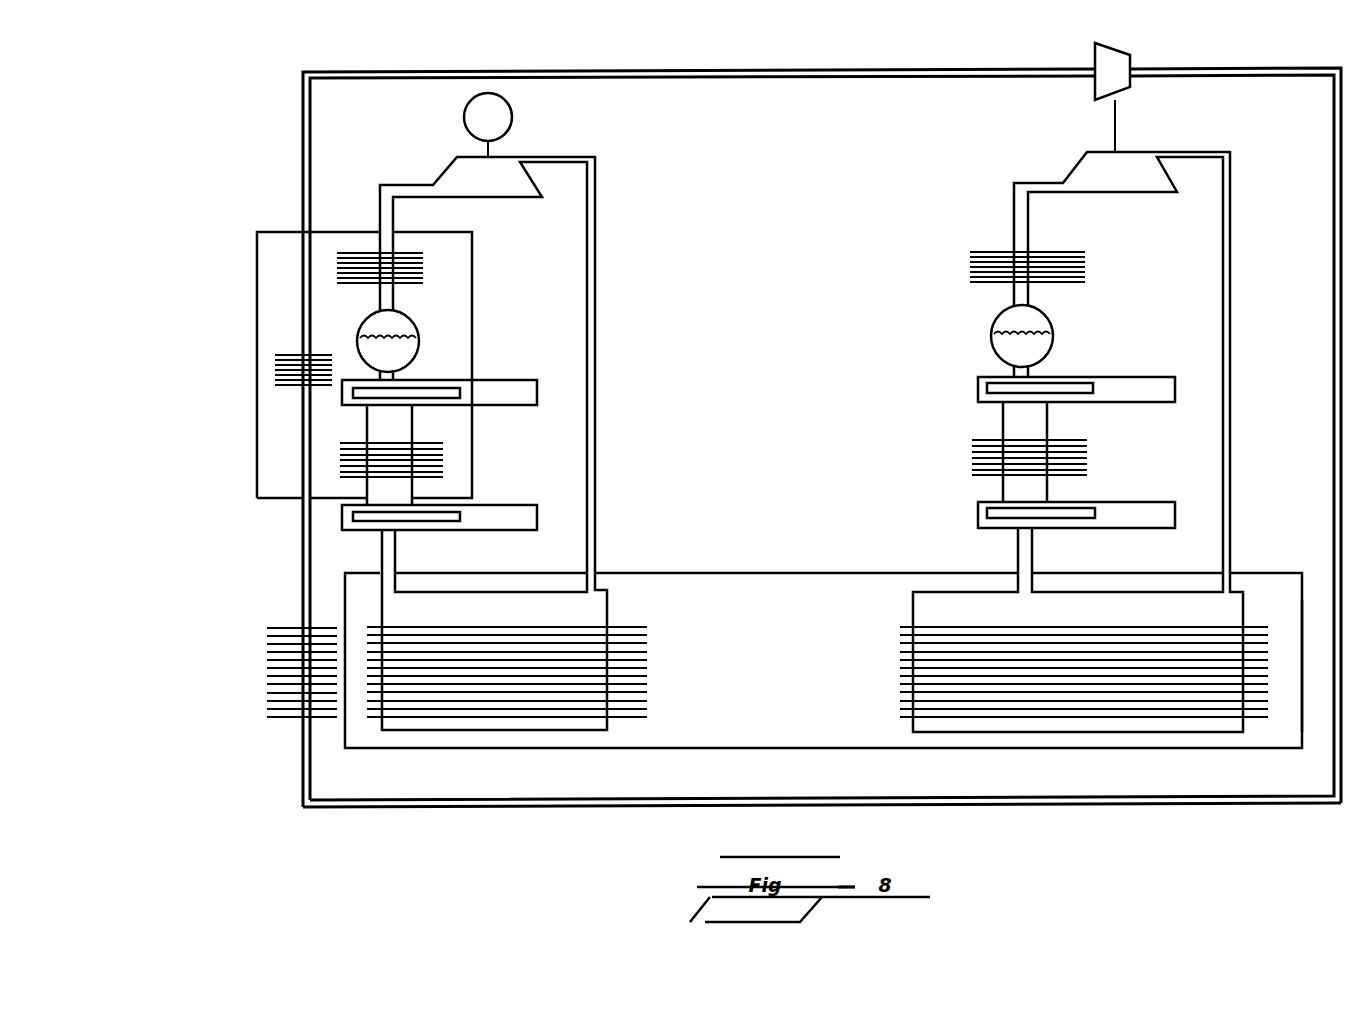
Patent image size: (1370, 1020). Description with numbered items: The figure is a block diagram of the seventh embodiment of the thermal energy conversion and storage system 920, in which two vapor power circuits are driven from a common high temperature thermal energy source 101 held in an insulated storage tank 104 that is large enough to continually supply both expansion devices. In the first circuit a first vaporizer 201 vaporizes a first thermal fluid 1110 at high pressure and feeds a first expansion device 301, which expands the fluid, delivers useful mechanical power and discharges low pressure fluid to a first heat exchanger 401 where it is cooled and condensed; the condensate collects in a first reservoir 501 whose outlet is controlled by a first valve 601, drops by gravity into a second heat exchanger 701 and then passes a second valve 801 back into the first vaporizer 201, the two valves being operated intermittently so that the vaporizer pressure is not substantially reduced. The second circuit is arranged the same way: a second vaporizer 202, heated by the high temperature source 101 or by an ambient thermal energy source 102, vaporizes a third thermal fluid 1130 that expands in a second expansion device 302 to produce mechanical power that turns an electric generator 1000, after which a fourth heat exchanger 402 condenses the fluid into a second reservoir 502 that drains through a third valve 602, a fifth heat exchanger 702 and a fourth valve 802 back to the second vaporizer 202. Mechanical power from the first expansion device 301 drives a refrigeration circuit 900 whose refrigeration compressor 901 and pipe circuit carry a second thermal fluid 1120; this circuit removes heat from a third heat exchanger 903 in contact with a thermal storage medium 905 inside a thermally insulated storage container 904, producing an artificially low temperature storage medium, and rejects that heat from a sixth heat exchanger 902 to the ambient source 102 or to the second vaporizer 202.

The power generation system housing 920 is at (252, 148).
The refrigeration circuit 900 is at (1140, 804).
The second thermal fluid 1120 is at (1334, 150).
The refrigeration compressor 901 is at (1123, 90).
The generator 1000 is at (466, 128).
The second expansion device 302 is at (445, 170).
The fourth heat exchanger 402 is at (423, 262).
The second reservoir 502 is at (407, 316).
The third thermal fluid 1130 is at (417, 347).
The third valve 602 is at (500, 408).
The fifth heat exchanger 702 is at (442, 462).
The fourth valve 802 is at (512, 503).
The thermally insulated storage container 904 is at (257, 273).
The thermal storage medium 905 is at (273, 488).
The third heat exchanger 903 is at (277, 368).
The ambient thermal energy source 102 is at (226, 567).
The high temperature thermal energy source 101 is at (1280, 573).
The second vaporizer 202 is at (647, 658).
The sixth heat exchanger 902 is at (270, 666).
The first expansion device 301 is at (1140, 193).
The first heat exchanger 401 is at (1083, 265).
The first reservoir 501 is at (1050, 310).
The first thermal fluid 1110 is at (1003, 348).
The first valve 601 is at (1122, 403).
The second heat exchanger 701 is at (975, 458).
The second valve 801 is at (1113, 497).
The first vaporizer 201 is at (1248, 713).
The insulated storage tank 104 is at (1302, 732).